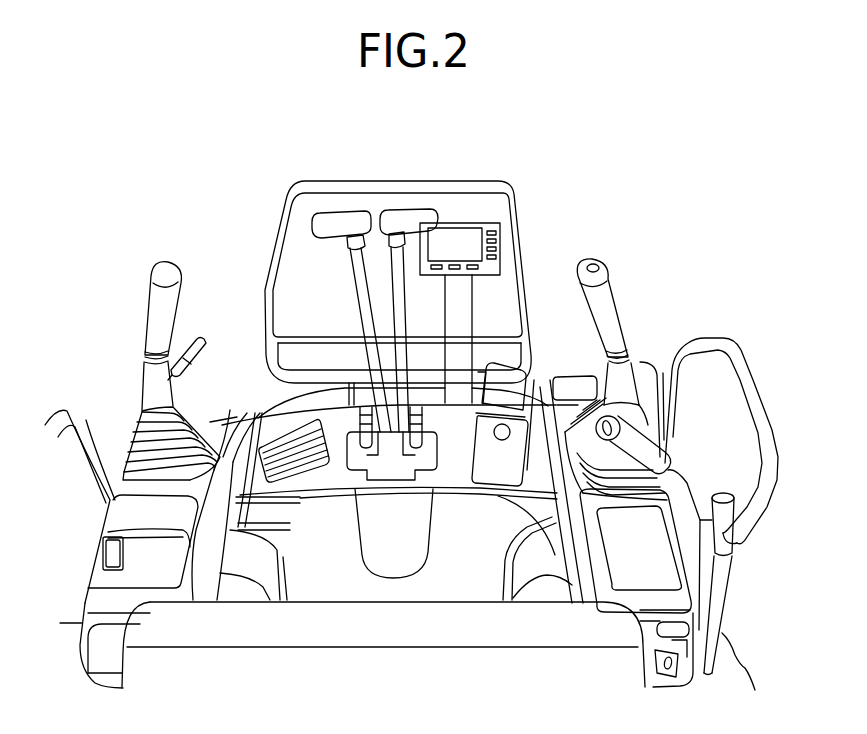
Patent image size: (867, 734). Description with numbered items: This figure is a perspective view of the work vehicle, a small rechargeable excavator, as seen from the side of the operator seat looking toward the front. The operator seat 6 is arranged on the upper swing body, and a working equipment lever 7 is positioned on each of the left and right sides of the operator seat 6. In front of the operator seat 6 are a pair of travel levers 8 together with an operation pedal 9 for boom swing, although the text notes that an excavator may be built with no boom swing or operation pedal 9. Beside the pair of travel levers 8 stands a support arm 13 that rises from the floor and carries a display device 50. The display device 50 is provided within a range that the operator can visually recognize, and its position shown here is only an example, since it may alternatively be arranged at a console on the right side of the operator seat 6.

The operator seat 6 is at (404, 637).
The working equipment lever 7 is at (157, 300).
The travel lever 8 is at (347, 220).
The operation pedal for boom swing 9 is at (506, 455).
The support arm 13 is at (462, 307).
The display device 50 is at (460, 237).